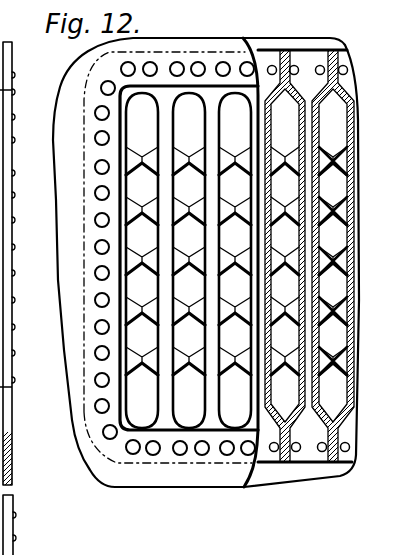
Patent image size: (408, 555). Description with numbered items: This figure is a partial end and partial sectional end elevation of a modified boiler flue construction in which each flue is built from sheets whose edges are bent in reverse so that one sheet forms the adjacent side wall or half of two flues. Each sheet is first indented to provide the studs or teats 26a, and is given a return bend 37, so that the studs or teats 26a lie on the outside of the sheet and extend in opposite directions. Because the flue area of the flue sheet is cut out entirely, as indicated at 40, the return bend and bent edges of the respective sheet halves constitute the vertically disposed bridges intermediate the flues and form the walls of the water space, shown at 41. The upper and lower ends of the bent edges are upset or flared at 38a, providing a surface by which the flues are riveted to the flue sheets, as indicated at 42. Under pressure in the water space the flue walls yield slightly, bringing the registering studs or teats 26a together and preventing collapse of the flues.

The studs or teats 26a is at (190, 145).
The return bend 37 is at (0, 552).
The upset or flared ends 38a is at (183, 430).
The cut-out flue area 40 is at (118, 272).
The water space walls 41 is at (216, 78).
The rivets 42 is at (270, 65).